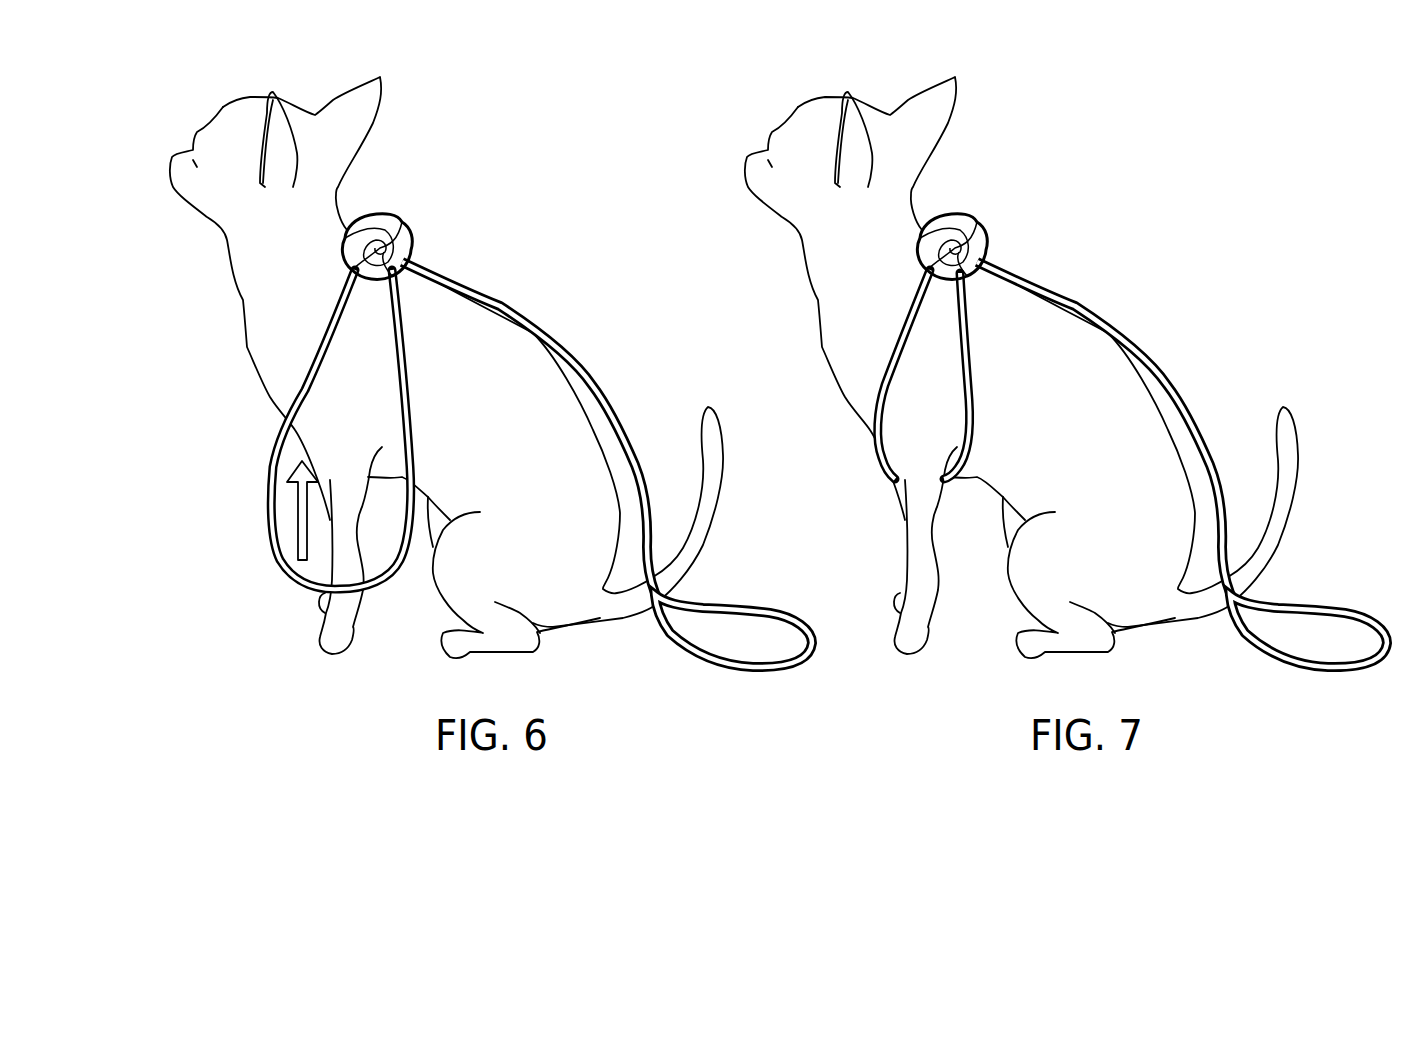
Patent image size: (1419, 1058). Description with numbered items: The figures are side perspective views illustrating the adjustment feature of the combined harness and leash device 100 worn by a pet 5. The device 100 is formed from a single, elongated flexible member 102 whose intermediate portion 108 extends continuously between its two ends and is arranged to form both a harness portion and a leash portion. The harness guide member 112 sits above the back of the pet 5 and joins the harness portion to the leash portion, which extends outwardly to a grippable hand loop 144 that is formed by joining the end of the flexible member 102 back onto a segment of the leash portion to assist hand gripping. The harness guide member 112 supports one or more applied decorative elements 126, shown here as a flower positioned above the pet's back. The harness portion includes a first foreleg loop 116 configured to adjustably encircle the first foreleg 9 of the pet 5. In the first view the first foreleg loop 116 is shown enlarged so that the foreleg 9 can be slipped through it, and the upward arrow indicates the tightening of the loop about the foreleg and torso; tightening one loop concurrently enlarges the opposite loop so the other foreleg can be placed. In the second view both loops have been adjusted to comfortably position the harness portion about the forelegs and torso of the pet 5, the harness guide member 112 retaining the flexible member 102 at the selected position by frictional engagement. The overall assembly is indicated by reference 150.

In FIG. 6, the pet 5 is at (446, 367).
In FIG. 7, the pet 5 is at (1021, 367).
In FIG. 6, the first foreleg 9 is at (320, 643).
In FIG. 7, the first foreleg 9 is at (903, 525).
In FIG. 6, the combined harness and leash device 100 is at (523, 410).
In FIG. 7, the combined harness and leash device 100 is at (1090, 386).
In FIG. 6, the elongated flexible member 102 is at (632, 495).
In FIG. 7, the elongated flexible member 102 is at (1182, 464).
In FIG. 6, the intermediate portion 108 is at (600, 393).
In FIG. 7, the intermediate portion 108 is at (1167, 387).
In FIG. 6, the harness guide member 112 is at (434, 231).
In FIG. 7, the harness guide member 112 is at (1010, 229).
In FIG. 6, the first foreleg loop 116 is at (272, 445).
In FIG. 7, the first foreleg loop 116 is at (878, 455).
In FIG. 6, the applied decorative elements 126 is at (413, 238).
In FIG. 7, the applied decorative elements 126 is at (988, 233).
In FIG. 6, the grippable hand loop 144 is at (760, 607).
In FIG. 7, the grippable hand loop 144 is at (1307, 608).
In FIG. 6, the harness and leash system 150 is at (516, 387).
In FIG. 7, the harness and leash system 150 is at (1066, 355).